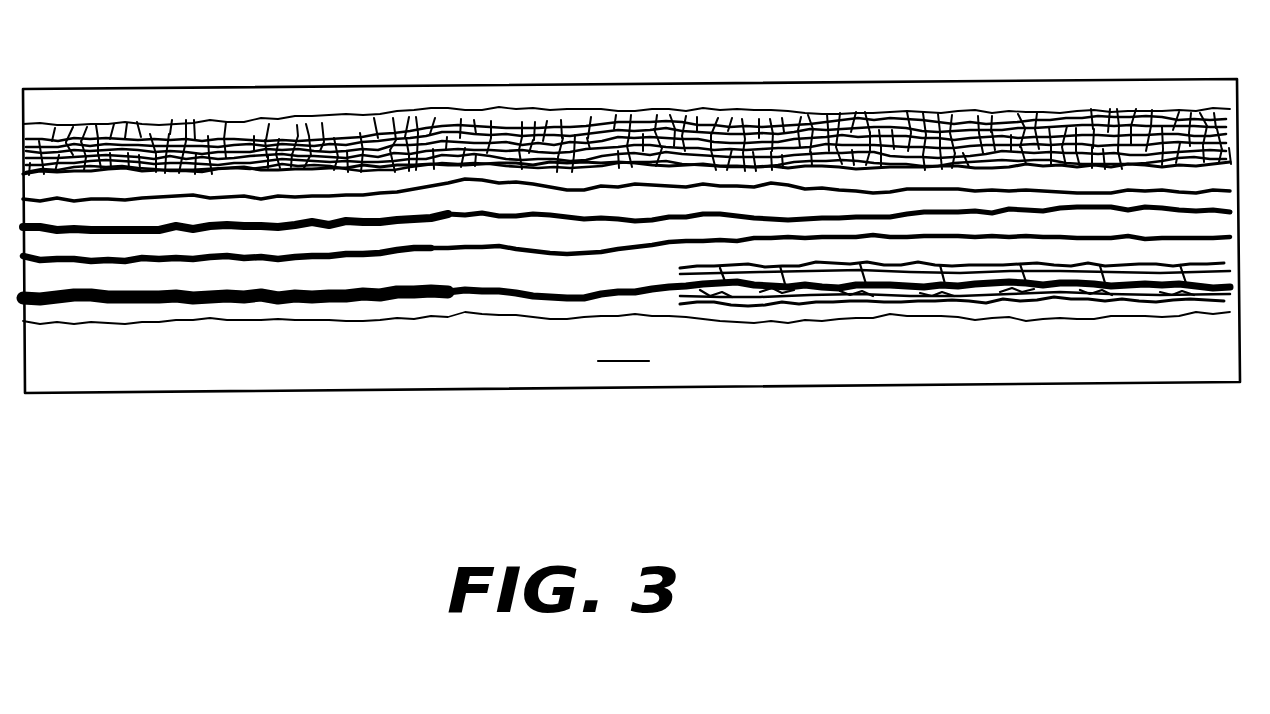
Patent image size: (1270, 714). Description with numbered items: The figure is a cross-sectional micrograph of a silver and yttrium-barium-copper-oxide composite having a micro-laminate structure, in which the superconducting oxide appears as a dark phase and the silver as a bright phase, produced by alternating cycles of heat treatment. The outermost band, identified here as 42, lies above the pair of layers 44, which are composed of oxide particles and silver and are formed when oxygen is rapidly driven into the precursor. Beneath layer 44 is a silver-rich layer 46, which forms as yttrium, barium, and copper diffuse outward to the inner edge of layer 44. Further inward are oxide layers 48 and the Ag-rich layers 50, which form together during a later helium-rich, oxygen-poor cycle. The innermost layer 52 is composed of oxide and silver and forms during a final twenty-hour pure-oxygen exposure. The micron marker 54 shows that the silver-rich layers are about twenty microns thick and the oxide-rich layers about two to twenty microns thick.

The first layer (outer grainy layer) 42 is at (161, 135).
The layers 44 is at (199, 160).
The silver-rich layer 46 is at (238, 183).
The oxide layers 48 is at (289, 200).
The Ag-rich layers 50 is at (337, 202).
The layer 52 is at (383, 215).
The micron marker 54 is at (647, 363).